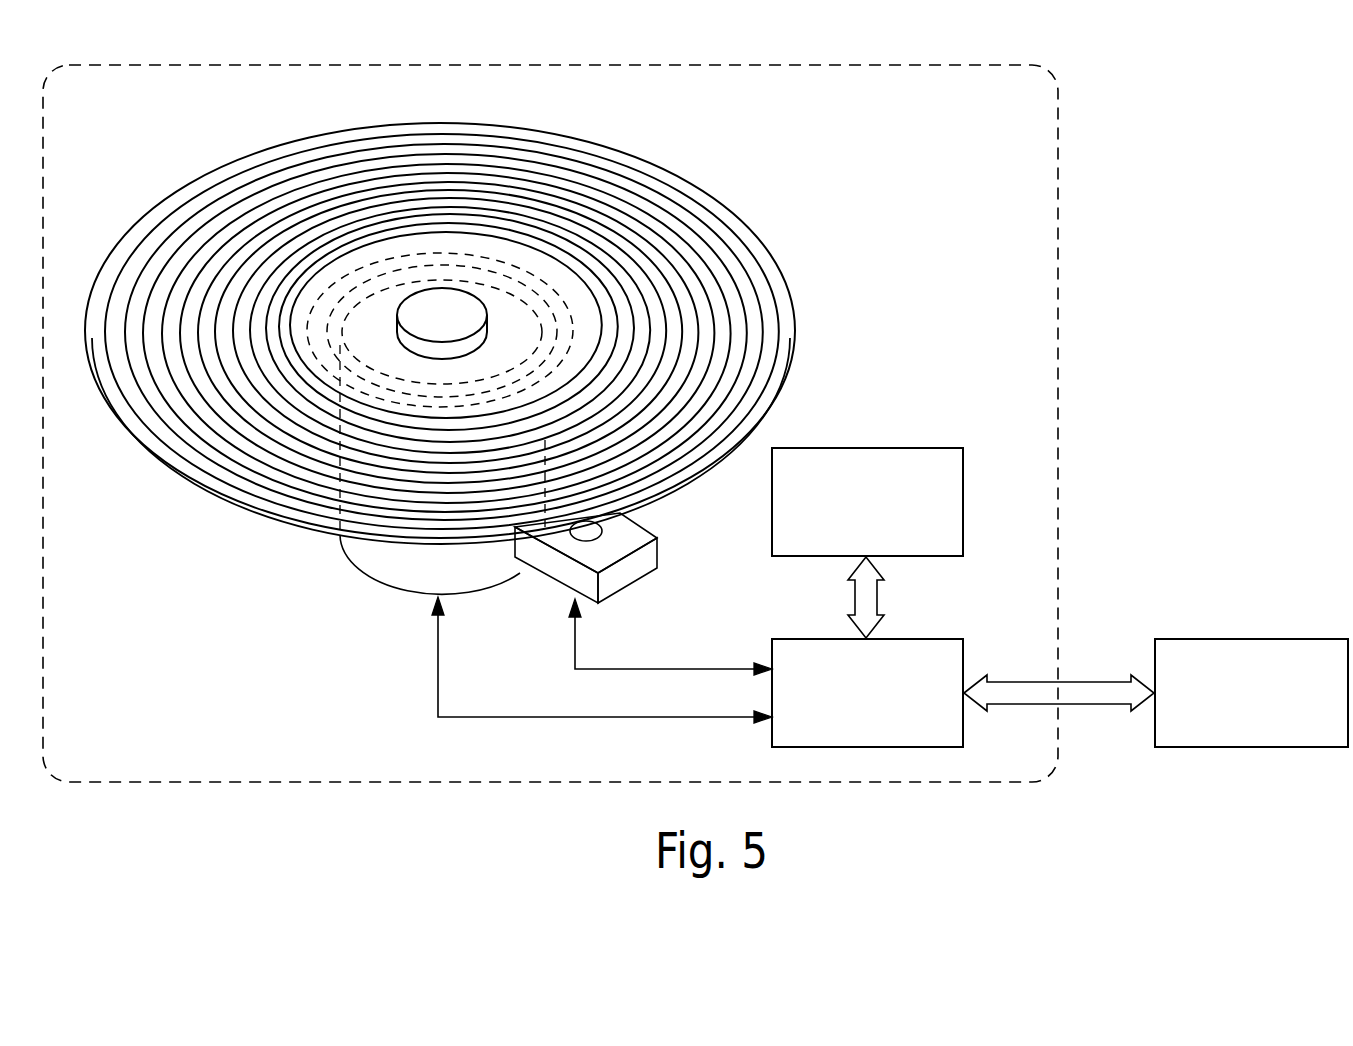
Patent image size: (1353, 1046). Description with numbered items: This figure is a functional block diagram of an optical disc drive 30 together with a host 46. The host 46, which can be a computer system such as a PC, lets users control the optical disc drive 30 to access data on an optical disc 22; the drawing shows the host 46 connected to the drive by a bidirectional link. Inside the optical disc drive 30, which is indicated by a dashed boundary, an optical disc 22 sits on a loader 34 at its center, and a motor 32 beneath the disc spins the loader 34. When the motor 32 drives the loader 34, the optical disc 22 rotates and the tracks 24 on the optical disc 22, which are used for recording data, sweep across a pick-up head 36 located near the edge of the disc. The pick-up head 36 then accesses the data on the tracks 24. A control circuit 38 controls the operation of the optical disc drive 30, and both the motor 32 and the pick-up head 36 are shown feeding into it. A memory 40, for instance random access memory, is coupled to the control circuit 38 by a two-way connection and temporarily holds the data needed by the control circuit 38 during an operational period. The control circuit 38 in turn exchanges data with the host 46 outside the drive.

The optical disc 22 is at (788, 336).
The tracks 24 is at (760, 258).
The optical disc drive 30 is at (1058, 332).
The motor 32 is at (468, 580).
The loader 34 is at (442, 298).
The pick-up head 36 is at (633, 572).
The control circuit 38 is at (965, 652).
The memory 40 is at (877, 447).
The host 46 is at (1228, 638).